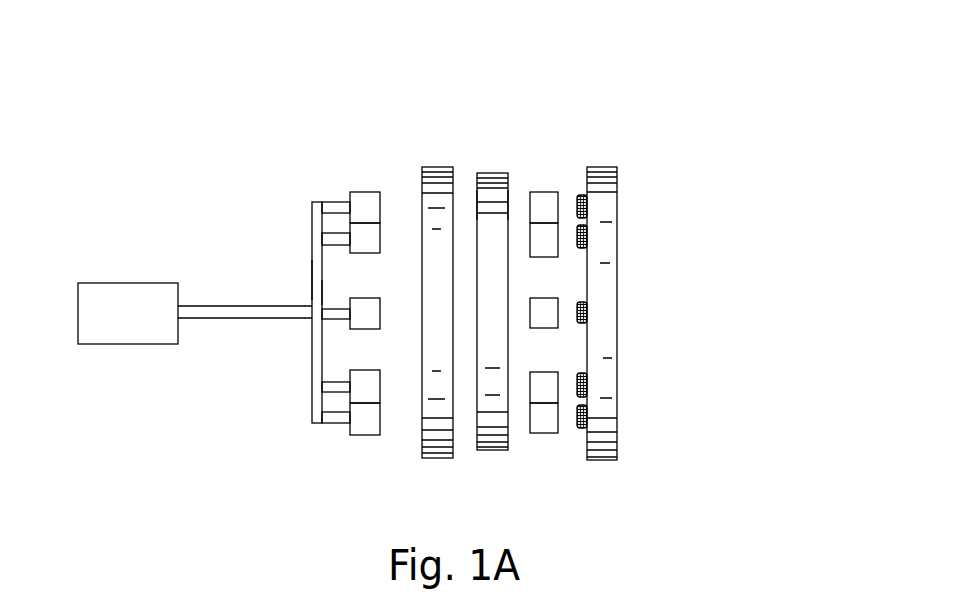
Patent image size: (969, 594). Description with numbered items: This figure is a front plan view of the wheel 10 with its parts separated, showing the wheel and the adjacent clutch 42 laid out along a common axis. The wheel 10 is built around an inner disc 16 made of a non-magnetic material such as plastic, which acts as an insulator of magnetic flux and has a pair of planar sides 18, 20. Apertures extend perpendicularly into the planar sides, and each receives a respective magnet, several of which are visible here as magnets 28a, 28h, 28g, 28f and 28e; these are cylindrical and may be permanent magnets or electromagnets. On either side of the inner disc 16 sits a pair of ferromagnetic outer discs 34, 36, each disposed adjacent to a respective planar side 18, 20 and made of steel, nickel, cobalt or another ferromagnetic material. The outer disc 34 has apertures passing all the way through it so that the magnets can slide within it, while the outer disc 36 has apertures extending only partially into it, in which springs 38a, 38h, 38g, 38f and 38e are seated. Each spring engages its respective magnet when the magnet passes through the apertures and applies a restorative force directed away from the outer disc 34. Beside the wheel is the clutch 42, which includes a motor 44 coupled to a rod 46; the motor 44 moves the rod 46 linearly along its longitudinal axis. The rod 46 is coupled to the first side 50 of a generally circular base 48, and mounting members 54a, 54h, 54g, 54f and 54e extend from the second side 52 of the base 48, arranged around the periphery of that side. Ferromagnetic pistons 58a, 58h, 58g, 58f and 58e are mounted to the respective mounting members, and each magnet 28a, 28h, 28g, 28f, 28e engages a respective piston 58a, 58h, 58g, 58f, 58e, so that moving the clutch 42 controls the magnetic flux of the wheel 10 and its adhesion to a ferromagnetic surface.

The wheel 10 is at (774, 77).
The inner disc 16 is at (495, 173).
The planar side 18 is at (472, 185).
The planar side 20 is at (508, 212).
The magnet 28a is at (543, 192).
The magnet 28e is at (560, 392).
The magnet 28f is at (543, 433).
The magnet 28g is at (540, 308).
The magnet 28h is at (558, 245).
The outer disc 34 is at (435, 167).
The outer disc 36 is at (607, 167).
The spring 38a is at (587, 192).
The spring 38e is at (587, 405).
The spring 38f is at (587, 373).
The spring 38g is at (587, 300).
The spring 38h is at (587, 225).
The clutch 42 is at (299, 79).
The motor 44 is at (125, 282).
The rod 46 is at (250, 306).
The base 48 is at (312, 245).
The first side 50 is at (312, 282).
The second side 52 is at (323, 293).
The mounting member 54a is at (342, 205).
The mounting member 54e is at (335, 420).
The mounting member 54f is at (328, 385).
The mounting member 54g is at (332, 313).
The mounting member 54h is at (322, 235).
The piston 58a is at (372, 203).
The piston 58e is at (357, 435).
The piston 58f is at (380, 385).
The piston 58g is at (365, 330).
The piston 58h is at (375, 243).